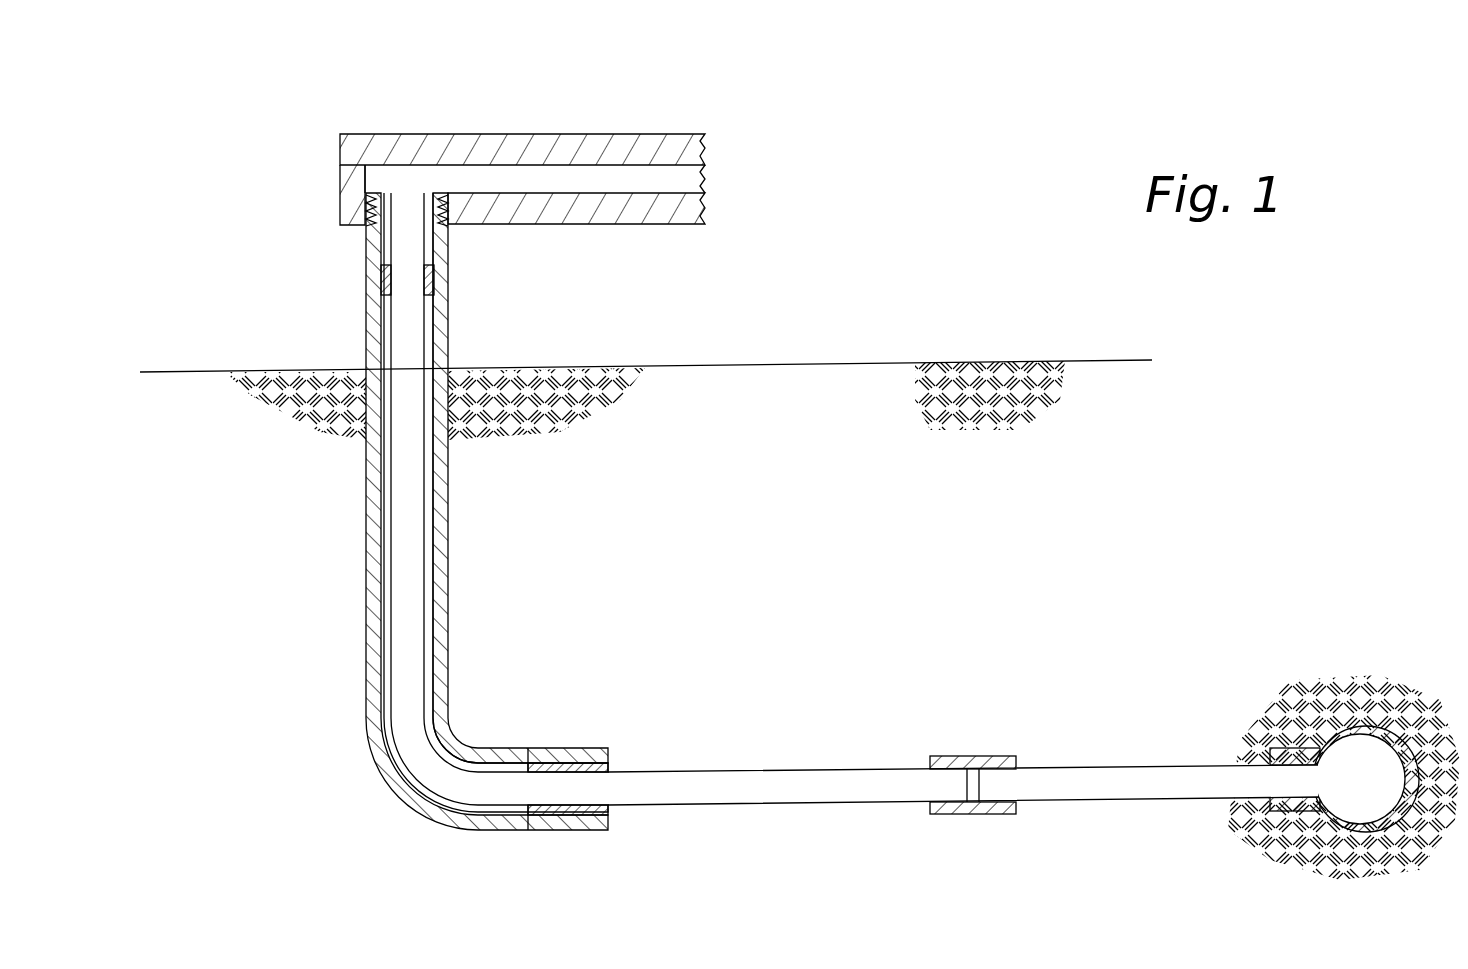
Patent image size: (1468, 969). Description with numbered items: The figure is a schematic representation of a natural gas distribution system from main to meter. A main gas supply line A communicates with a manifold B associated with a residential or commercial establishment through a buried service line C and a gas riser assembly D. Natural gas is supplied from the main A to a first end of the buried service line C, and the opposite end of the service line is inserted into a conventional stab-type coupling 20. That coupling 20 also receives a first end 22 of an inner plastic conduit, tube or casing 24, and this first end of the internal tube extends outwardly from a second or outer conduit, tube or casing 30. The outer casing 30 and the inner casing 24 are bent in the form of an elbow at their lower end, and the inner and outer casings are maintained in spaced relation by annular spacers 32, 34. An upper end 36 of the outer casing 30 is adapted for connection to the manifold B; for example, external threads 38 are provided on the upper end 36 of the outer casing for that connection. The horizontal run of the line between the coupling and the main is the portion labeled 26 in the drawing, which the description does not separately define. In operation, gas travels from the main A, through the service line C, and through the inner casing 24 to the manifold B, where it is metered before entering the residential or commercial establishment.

The stab-type coupling 20 is at (994, 757).
The first end of inner plastic conduit 22 is at (952, 782).
The inner plastic conduit 24 is at (418, 658).
The pipeline 26 is at (830, 804).
The outer conduit 30 is at (362, 537).
The annular spacer 32 is at (588, 750).
The annular spacer 34 is at (431, 278).
The upper end of outer casing 36 is at (449, 247).
The external threads 38 is at (363, 208).
The main gas supply line A is at (1412, 676).
The manifold B is at (580, 131).
The buried service line C is at (1084, 803).
The gas riser assembly D is at (384, 774).